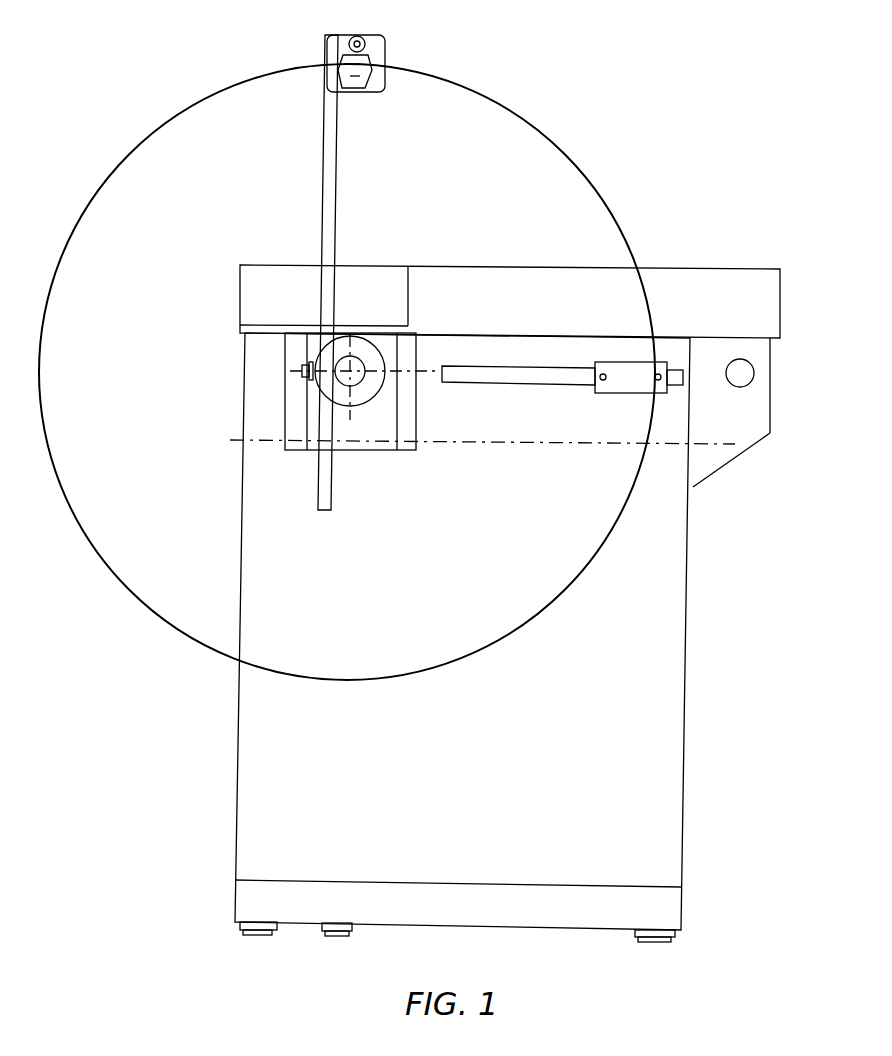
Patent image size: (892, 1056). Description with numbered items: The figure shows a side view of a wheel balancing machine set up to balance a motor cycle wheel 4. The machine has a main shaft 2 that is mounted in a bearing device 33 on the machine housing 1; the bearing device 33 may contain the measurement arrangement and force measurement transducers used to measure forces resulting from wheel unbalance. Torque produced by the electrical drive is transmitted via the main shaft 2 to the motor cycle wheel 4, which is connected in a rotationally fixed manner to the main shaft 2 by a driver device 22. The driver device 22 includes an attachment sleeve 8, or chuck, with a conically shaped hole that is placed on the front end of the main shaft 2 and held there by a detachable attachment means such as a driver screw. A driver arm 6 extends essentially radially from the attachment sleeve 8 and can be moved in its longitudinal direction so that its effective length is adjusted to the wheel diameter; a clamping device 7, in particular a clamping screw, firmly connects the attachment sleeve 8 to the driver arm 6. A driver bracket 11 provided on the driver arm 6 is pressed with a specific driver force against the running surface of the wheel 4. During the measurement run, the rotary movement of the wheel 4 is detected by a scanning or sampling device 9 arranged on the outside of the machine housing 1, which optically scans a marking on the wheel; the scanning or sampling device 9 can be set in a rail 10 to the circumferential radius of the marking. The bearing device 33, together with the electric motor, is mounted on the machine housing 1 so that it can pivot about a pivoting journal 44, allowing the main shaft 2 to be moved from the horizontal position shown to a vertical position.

The machine housing 1 is at (277, 821).
The main shaft 2 is at (333, 388).
The motor cycle wheel 4 is at (170, 625).
The driver arm 6 is at (325, 202).
The clamping device 7 is at (305, 370).
The attachment sleeve 8 is at (316, 373).
The scanning or sampling device 9 is at (630, 367).
The rail 10 is at (545, 368).
The driver bracket 11 is at (435, 77).
The driver device 22 is at (305, 133).
The bearing device 33 is at (298, 355).
The pivoting journal 44 is at (637, 443).